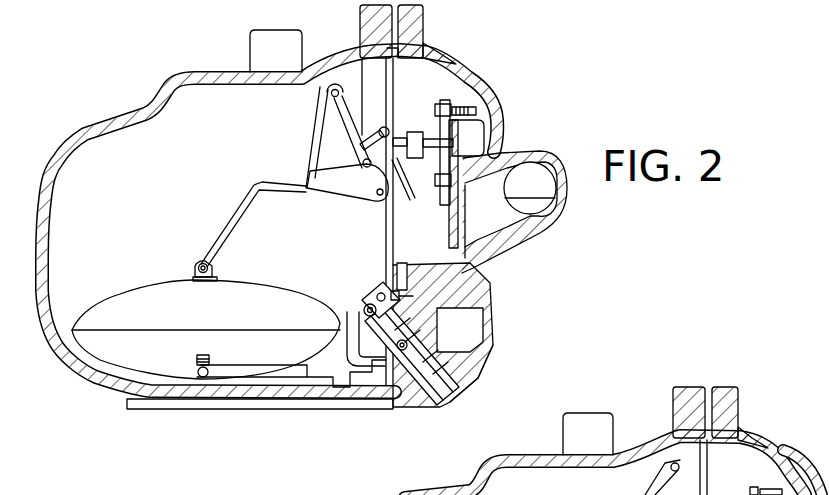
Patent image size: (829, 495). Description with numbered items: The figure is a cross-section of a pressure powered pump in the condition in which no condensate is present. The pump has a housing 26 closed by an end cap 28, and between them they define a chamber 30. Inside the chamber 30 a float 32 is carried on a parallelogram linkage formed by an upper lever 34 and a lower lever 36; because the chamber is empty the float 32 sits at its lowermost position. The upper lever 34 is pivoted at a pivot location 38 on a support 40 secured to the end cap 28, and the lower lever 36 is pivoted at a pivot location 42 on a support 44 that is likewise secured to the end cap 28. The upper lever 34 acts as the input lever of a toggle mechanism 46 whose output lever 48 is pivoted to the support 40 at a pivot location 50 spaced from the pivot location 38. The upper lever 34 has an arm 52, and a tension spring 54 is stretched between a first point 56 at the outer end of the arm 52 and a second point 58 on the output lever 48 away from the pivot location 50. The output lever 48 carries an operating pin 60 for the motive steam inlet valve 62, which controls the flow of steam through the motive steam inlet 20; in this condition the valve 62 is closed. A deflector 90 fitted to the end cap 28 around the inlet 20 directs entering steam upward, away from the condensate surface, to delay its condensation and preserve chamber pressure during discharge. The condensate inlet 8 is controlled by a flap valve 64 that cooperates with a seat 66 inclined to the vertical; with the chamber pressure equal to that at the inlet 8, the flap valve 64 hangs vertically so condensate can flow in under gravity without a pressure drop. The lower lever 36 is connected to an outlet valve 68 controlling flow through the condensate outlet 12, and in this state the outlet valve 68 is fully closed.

The condensate inlet 8 is at (548, 203).
The condensate outlet 12 is at (488, 366).
The motive steam inlet 20 is at (470, 134).
The housing 26 is at (146, 103).
The end cap 28 is at (472, 343).
The chamber 30 is at (122, 223).
The float 32 is at (217, 312).
The upper lever 34 is at (247, 200).
The lower lever 36 is at (368, 312).
The pivot location 38 is at (362, 194).
The support 40 is at (426, 122).
The pivot location 42 is at (385, 292).
The support 44 is at (400, 288).
The toggle mechanism 46 is at (369, 110).
The output lever 48 is at (332, 166).
The pivot location 50 is at (386, 127).
The arm 52 is at (318, 104).
The tension spring 54 is at (340, 110).
The first point 56 is at (320, 83).
The second point 58 is at (396, 165).
The operating pin 60 is at (360, 138).
The motive steam inlet valve 62 is at (440, 128).
The flap valve 64 is at (448, 231).
The seat 66 is at (480, 240).
The outlet valve 68 is at (416, 392).
The deflector 90 is at (478, 154).